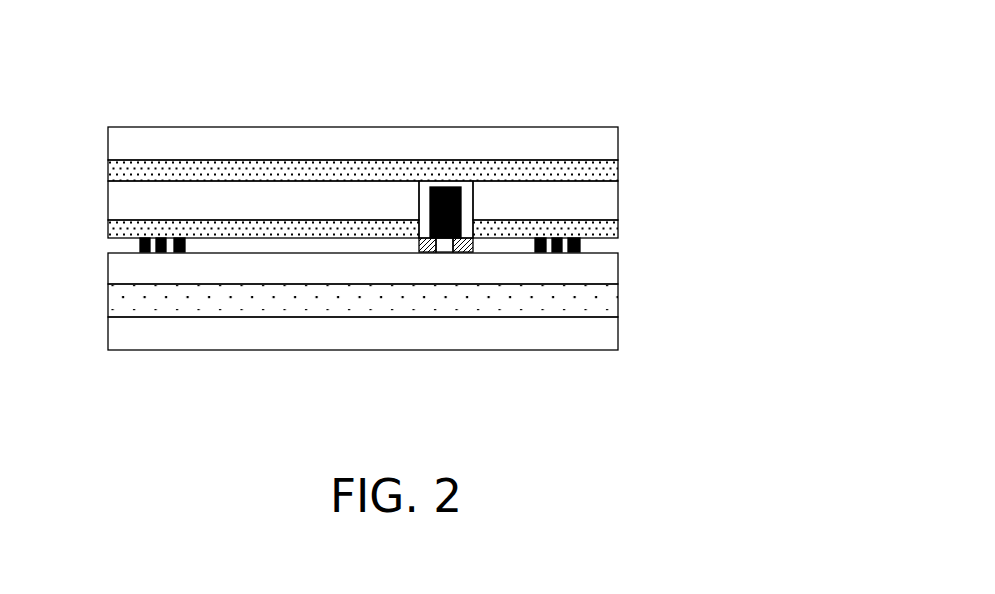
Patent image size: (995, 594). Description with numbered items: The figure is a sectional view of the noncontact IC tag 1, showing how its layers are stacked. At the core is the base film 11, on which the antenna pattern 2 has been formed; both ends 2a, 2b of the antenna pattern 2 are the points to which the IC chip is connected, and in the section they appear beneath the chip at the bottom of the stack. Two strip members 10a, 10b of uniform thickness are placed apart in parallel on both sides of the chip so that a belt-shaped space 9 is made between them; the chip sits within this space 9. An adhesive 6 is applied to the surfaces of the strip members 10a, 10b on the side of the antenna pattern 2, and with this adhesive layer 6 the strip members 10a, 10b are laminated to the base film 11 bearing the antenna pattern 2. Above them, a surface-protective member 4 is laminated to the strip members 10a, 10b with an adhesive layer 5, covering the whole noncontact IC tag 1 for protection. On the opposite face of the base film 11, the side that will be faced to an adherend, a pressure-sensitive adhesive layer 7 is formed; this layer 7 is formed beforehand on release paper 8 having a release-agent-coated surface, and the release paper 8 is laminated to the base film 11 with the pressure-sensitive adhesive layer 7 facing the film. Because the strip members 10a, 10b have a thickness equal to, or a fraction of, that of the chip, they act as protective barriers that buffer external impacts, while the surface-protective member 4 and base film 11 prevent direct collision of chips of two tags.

The noncontact IC tag 1 is at (333, 123).
The antenna pattern 2 is at (188, 255).
The end of antenna pattern 2a is at (428, 253).
The end of antenna pattern 2b is at (460, 253).
The surface-protective member 4 is at (613, 148).
The adhesive layer 5 is at (613, 172).
The adhesive layer 6 is at (613, 228).
The pressure-sensitive adhesive layer 7 is at (612, 305).
The release paper 8 is at (612, 338).
The belt-shaped space 9 is at (425, 188).
The strip member 10a is at (613, 200).
The strip member 10b is at (118, 205).
The base film 11 is at (612, 272).